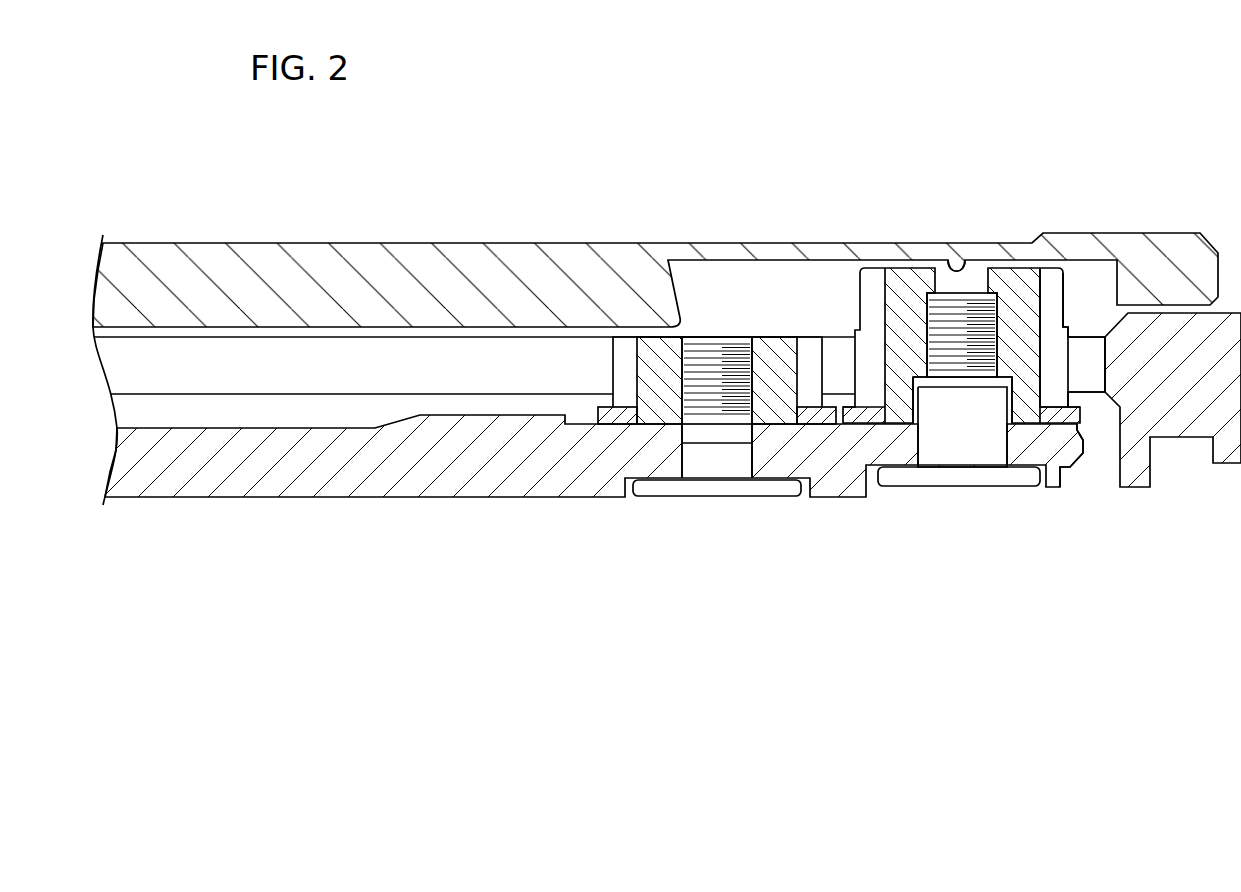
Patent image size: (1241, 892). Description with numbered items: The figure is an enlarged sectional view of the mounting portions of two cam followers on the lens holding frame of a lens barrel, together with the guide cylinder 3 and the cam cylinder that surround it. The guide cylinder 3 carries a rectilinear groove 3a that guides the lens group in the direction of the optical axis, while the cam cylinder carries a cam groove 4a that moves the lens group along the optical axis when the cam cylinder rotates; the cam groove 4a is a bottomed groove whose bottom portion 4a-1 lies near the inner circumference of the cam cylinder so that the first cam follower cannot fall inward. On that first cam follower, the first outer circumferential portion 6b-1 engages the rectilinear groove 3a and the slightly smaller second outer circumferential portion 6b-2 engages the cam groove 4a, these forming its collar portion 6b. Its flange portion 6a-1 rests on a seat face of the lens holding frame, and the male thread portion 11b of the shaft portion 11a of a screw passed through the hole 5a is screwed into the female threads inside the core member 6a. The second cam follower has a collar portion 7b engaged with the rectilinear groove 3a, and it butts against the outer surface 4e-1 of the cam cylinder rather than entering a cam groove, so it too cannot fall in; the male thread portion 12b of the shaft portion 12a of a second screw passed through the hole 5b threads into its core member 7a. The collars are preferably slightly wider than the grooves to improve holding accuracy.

The guide cylinder 3 is at (1172, 418).
The rectilinear groove 3a is at (482, 383).
The cam groove 4a is at (684, 300).
The bottom portion 4a-1 is at (962, 257).
The outer surface 4e-1 is at (340, 329).
The hole 5a is at (1005, 438).
The hole 5b is at (748, 462).
The core member 6a is at (1025, 410).
The flange portion 6a-1 is at (1078, 417).
The collar portion 6b is at (1050, 388).
The first outer circumferential portion 6b-1 is at (1080, 337).
The second outer circumferential portion 6b-2 is at (1072, 293).
The core member 7a is at (658, 407).
The collar portion 7b is at (618, 377).
The shaft portion 11a is at (947, 450).
The male thread portion 11b is at (940, 333).
The shaft portion 12a is at (712, 460).
The male thread portion 12b is at (672, 355).